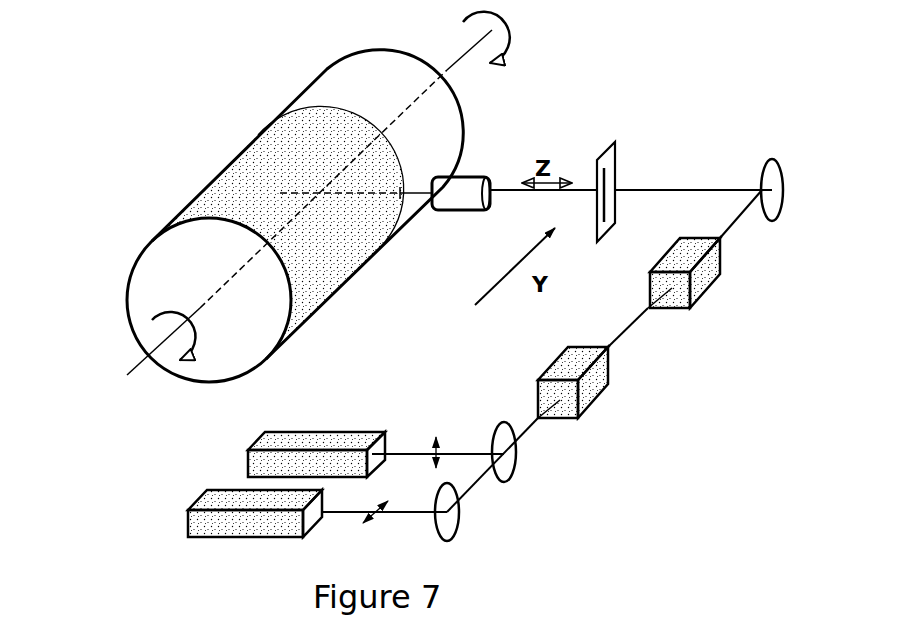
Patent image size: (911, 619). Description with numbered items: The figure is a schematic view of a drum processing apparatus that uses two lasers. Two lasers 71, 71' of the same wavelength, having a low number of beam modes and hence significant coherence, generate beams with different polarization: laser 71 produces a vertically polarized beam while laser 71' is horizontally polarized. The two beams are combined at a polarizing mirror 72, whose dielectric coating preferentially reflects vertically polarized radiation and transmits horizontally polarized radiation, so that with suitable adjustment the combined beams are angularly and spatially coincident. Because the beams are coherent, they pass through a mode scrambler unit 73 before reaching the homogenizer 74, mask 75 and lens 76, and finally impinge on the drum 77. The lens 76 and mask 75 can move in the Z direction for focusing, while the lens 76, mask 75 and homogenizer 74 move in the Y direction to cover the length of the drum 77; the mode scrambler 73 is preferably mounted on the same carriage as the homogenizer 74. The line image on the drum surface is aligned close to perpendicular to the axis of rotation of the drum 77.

The laser 71 is at (293, 451).
The laser 71' is at (248, 510).
The polarizing mirror 72 is at (520, 465).
The mode scrambler unit 73 is at (615, 393).
The homogenizer 74 is at (687, 317).
The mask 75 is at (637, 170).
The lens 76 is at (485, 168).
The drum 77 is at (263, 113).